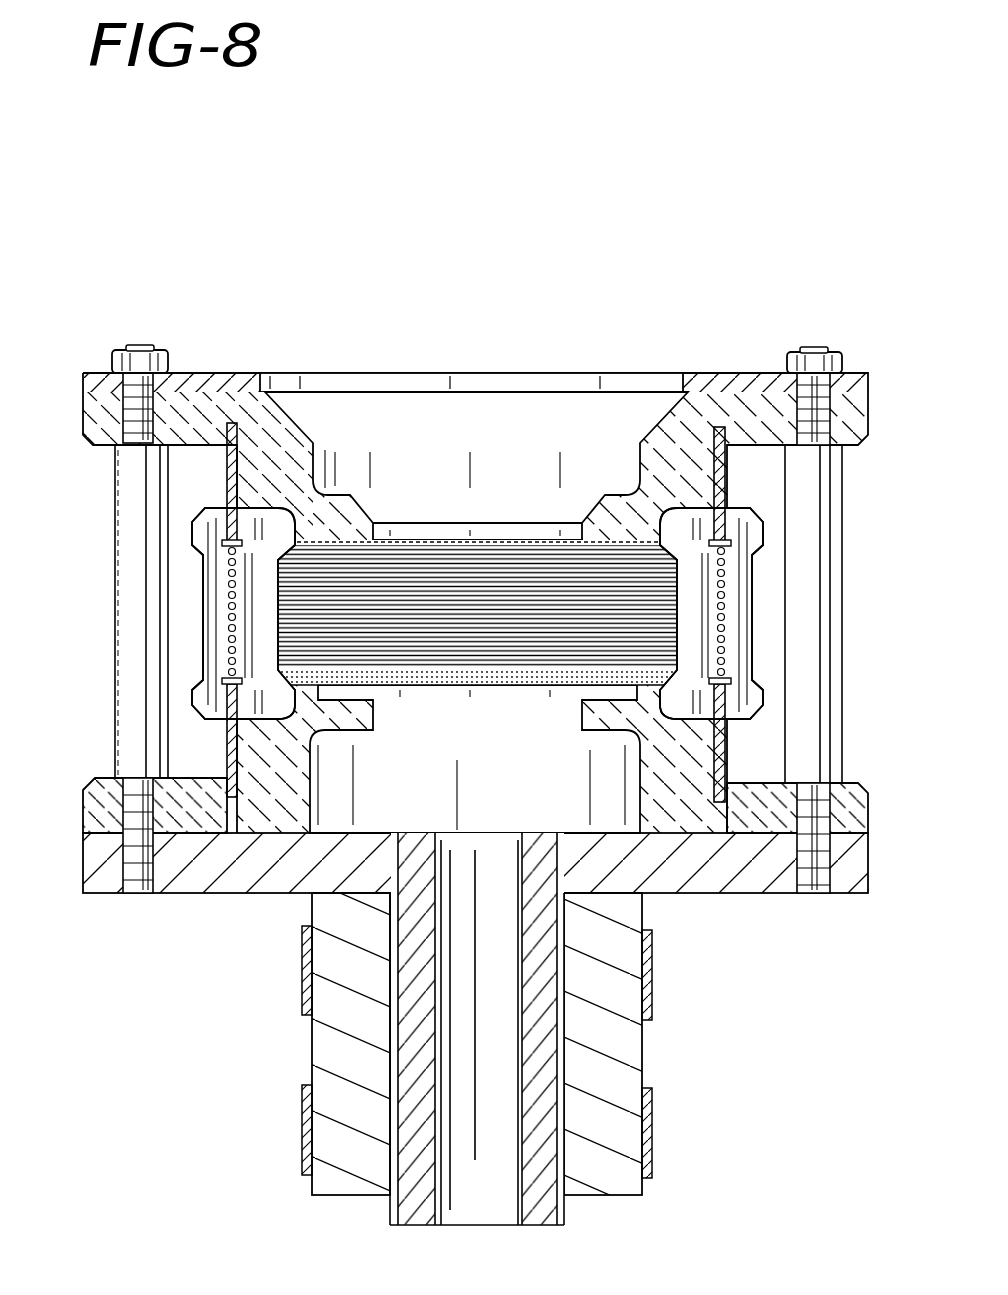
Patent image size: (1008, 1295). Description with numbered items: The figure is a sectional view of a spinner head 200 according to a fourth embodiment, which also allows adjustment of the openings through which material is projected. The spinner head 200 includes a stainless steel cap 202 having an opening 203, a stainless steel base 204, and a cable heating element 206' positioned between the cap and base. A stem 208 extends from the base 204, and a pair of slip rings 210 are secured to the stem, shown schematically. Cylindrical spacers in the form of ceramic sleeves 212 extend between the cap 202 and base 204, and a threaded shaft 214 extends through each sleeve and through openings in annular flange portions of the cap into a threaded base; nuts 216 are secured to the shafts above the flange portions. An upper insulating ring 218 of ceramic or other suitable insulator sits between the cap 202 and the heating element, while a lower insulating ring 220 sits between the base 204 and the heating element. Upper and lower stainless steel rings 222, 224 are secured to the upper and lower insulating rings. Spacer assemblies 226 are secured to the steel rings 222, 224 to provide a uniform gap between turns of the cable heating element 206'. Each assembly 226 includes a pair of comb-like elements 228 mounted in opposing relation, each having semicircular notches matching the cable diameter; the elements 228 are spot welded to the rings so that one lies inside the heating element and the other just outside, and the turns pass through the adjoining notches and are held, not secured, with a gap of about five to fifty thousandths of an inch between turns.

The spinner head 200 is at (638, 182).
The stainless steel cap 202 is at (728, 392).
The opening 203 is at (678, 392).
The stainless steel base 204 is at (761, 897).
The cable heating element 206' is at (480, 567).
The stem 208 is at (642, 1068).
The slip rings 210 is at (301, 994).
The sleeves 212 is at (132, 570).
The threaded shaft 214 is at (160, 424).
The nuts 216 is at (120, 350).
The upper insulating ring 218 is at (272, 423).
The lower insulating ring 220 is at (83, 805).
The upper stainless steel ring 222 is at (228, 486).
The lower stainless steel ring 224 is at (225, 748).
The spacer assemblies 226 is at (760, 528).
The comb-like elements 228 is at (212, 634).